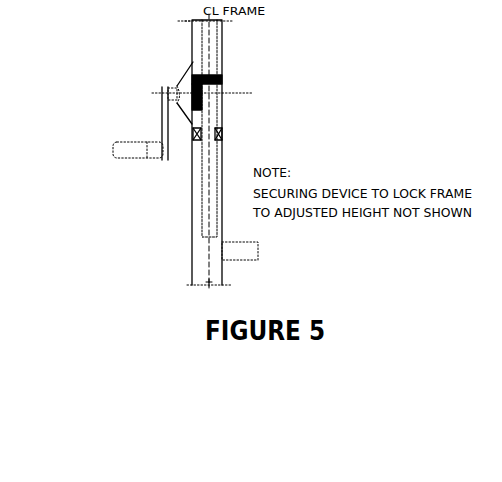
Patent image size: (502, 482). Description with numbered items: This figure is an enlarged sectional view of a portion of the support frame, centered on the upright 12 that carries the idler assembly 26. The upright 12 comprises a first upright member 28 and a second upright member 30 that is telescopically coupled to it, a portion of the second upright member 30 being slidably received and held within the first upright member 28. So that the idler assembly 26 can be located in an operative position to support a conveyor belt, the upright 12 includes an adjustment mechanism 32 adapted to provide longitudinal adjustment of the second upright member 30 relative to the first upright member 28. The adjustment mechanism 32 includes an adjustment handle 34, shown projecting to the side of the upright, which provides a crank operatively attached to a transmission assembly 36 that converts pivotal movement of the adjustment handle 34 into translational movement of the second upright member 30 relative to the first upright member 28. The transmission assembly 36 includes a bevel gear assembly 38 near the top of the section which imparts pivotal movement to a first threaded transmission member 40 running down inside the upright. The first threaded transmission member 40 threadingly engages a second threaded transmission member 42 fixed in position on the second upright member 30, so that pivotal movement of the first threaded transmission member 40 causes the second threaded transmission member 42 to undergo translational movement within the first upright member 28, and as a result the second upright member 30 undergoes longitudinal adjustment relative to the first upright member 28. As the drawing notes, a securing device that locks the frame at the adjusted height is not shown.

The upright 12 is at (307, 117).
The idler assembly 26 is at (263, 254).
The first upright member 28 is at (223, 43).
The second upright member 30 is at (222, 268).
The adjustment mechanism 32 is at (178, 42).
The adjustment handle 34 is at (162, 113).
The transmission assembly 36 is at (225, 108).
The bevel gear assembly 38 is at (229, 84).
The first threaded transmission member 40 is at (210, 217).
The second threaded transmission member 42 is at (225, 136).